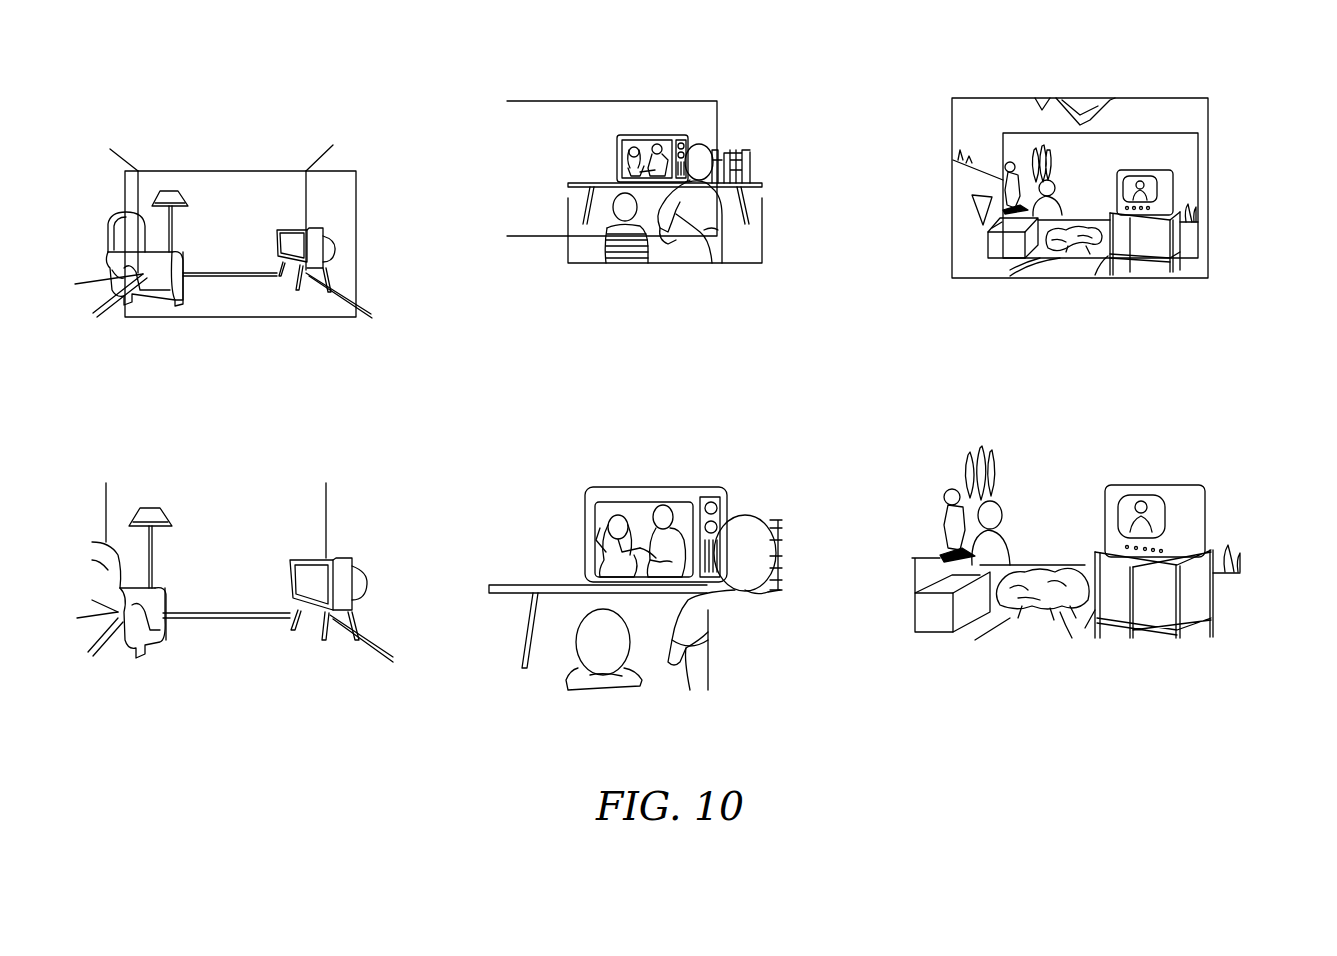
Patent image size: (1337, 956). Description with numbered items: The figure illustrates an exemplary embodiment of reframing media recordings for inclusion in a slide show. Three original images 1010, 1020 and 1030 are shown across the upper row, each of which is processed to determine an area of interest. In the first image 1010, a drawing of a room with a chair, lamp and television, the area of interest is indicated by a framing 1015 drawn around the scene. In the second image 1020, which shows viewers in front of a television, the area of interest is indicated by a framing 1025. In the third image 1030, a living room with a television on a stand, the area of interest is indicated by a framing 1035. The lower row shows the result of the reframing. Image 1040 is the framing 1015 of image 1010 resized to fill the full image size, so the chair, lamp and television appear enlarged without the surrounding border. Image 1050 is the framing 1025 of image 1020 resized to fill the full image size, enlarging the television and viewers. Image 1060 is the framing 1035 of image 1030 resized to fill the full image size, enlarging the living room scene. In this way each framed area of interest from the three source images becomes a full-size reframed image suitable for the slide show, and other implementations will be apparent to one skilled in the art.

The image 1010 is at (223, 256).
The framing 1015 is at (356, 217).
The image 1020 is at (665, 224).
The framing 1025 is at (717, 120).
The image 1030 is at (1075, 208).
The framing 1035 is at (1208, 175).
The image 1040 is at (235, 588).
The image 1050 is at (635, 615).
The image 1060 is at (1076, 564).